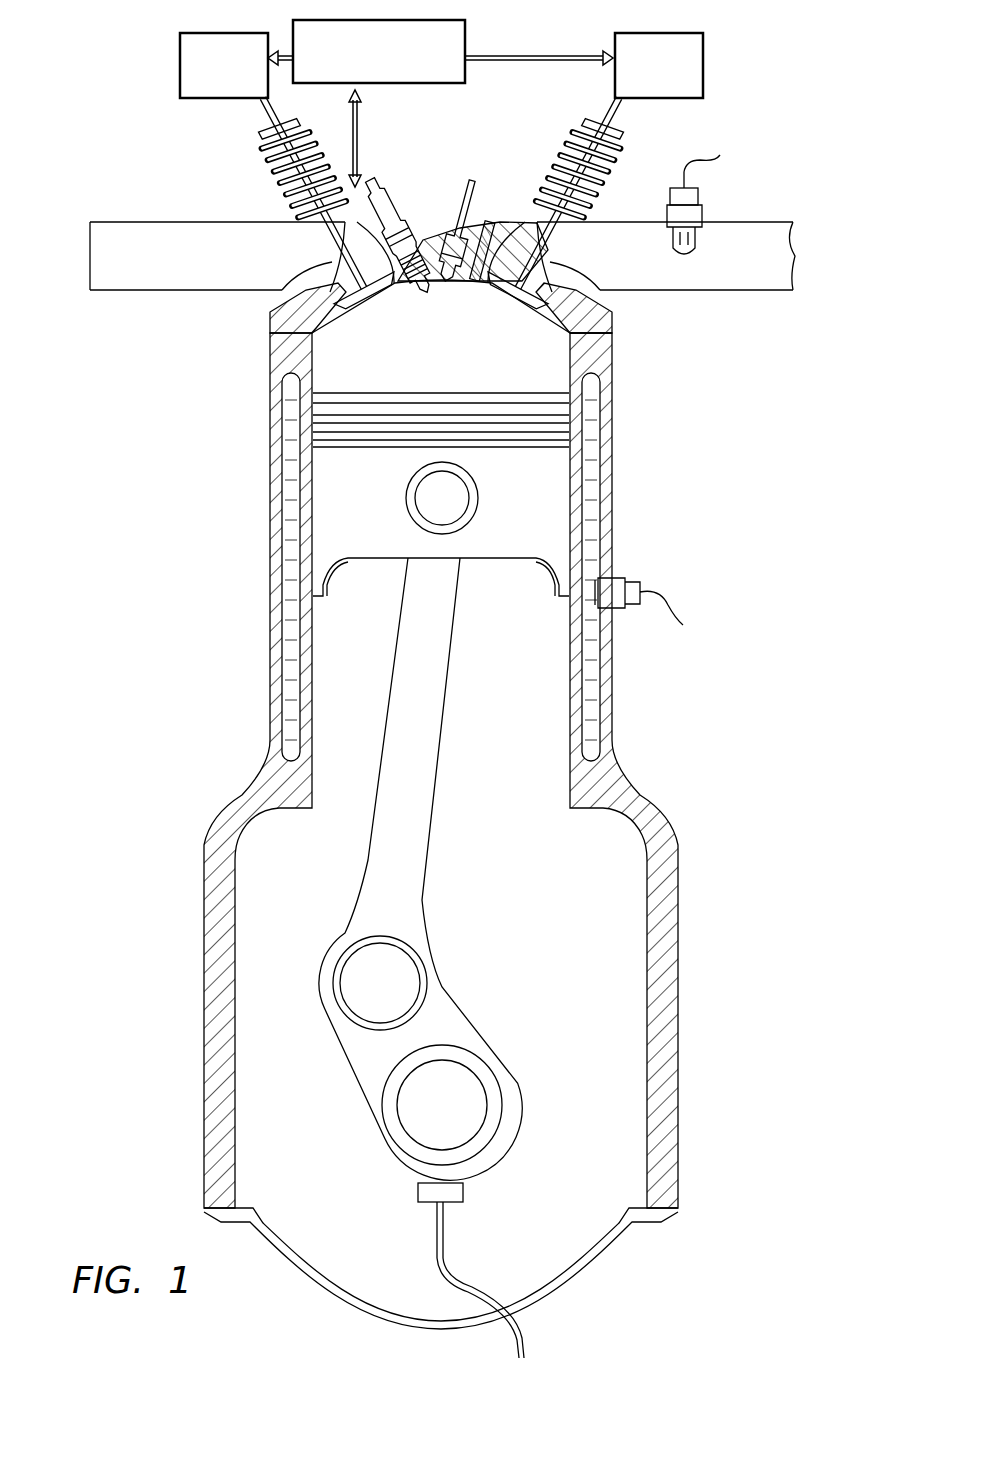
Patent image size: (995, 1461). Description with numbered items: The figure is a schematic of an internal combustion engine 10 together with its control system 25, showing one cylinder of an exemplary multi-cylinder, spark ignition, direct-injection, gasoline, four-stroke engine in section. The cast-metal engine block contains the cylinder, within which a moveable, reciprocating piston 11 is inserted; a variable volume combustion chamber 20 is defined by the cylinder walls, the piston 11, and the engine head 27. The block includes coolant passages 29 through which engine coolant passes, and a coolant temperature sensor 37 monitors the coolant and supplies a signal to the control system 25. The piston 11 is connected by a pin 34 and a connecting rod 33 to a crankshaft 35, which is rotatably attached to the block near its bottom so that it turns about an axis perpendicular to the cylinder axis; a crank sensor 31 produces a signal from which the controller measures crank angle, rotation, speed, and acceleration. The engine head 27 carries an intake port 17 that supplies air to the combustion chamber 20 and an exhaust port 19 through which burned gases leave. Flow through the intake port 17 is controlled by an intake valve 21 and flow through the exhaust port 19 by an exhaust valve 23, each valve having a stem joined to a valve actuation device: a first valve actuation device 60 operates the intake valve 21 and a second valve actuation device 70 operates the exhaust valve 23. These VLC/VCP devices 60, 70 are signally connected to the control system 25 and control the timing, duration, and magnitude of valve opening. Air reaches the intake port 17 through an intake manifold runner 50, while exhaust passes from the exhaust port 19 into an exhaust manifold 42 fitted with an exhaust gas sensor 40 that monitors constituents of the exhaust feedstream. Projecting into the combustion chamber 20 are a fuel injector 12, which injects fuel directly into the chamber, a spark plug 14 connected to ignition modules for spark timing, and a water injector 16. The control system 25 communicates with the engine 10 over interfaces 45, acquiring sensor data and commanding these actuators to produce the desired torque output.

The internal combustion engine 10 is at (122, 432).
The piston 11 is at (540, 505).
The fuel injector 12 is at (460, 212).
The spark plug 14 is at (398, 200).
The water injector 16 is at (486, 224).
The intake port 17 is at (325, 278).
The exhaust port 19 is at (552, 278).
The combustion chamber 20 is at (335, 368).
The intake valve 21 is at (327, 245).
The exhaust valve 23 is at (553, 258).
The control system 25 is at (455, 33).
The engine head 27 is at (612, 326).
The coolant passages 29 is at (598, 428).
The crank sensor 31 is at (418, 1190).
The connecting rod 33 is at (415, 663).
The pin 34 is at (433, 497).
The crankshaft 35 is at (380, 1104).
The coolant temperature sensor 37 is at (645, 580).
The exhaust gas sensor 40 is at (700, 214).
The exhaust manifold 42 is at (782, 255).
The interfaces 45 is at (362, 127).
The intake manifold runner 50 is at (165, 282).
The valve actuation device 60 is at (182, 40).
The second valve actuation device 70 is at (700, 48).